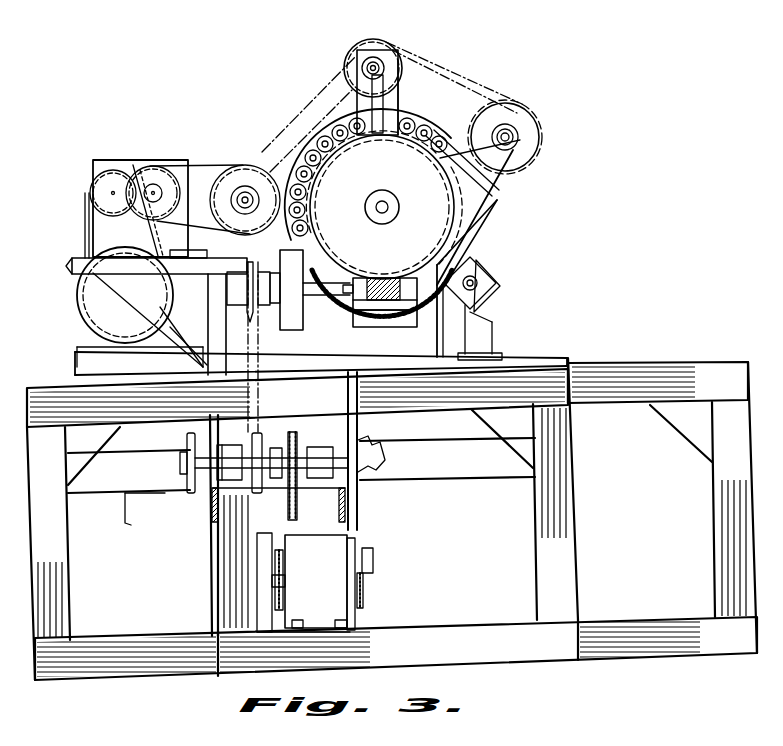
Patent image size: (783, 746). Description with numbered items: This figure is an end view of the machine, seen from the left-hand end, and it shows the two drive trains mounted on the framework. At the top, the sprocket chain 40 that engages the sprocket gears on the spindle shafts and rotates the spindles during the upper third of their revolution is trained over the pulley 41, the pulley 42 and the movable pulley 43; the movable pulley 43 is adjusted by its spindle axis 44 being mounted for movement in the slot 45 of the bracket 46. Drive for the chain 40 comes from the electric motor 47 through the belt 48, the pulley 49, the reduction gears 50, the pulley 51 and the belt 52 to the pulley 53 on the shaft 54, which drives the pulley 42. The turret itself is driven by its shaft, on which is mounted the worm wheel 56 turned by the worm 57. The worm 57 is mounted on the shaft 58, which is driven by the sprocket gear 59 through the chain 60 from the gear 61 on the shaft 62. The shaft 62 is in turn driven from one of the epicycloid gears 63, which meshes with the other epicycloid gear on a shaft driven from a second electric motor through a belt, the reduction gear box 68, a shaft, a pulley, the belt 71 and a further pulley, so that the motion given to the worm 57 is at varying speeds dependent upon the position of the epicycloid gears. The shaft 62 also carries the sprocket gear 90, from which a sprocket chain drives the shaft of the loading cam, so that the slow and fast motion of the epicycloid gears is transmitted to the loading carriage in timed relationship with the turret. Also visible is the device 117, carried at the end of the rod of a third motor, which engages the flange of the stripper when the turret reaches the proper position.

The sprocket chain 40 is at (470, 88).
The pulley 41 is at (528, 140).
The pulley 42 is at (320, 162).
The movable pulley 43 is at (345, 72).
The spindle axis 44 is at (380, 66).
The slot 45 is at (398, 112).
The bracket 46 is at (357, 104).
The electric motor 47 is at (98, 310).
The belt 48 is at (86, 237).
The pulley 49 is at (92, 193).
The reduction gears 50 is at (135, 210).
The pulley 51 is at (147, 176).
The belt 52 is at (200, 165).
The pulley 53 is at (220, 178).
The shaft 54 is at (246, 195).
The worm wheel 56 is at (374, 272).
The worm 57 is at (410, 276).
The shaft 58 is at (326, 288).
The sprocket gear 59 is at (245, 300).
The chain 60 is at (254, 399).
The gear 61 is at (238, 484).
The shaft 62 is at (270, 474).
The epicycloid gear 63 is at (296, 486).
The reduction gear box 68 is at (340, 610).
The belt 71 is at (360, 526).
The sprocket gear 90 is at (180, 455).
The device 117 is at (470, 260).